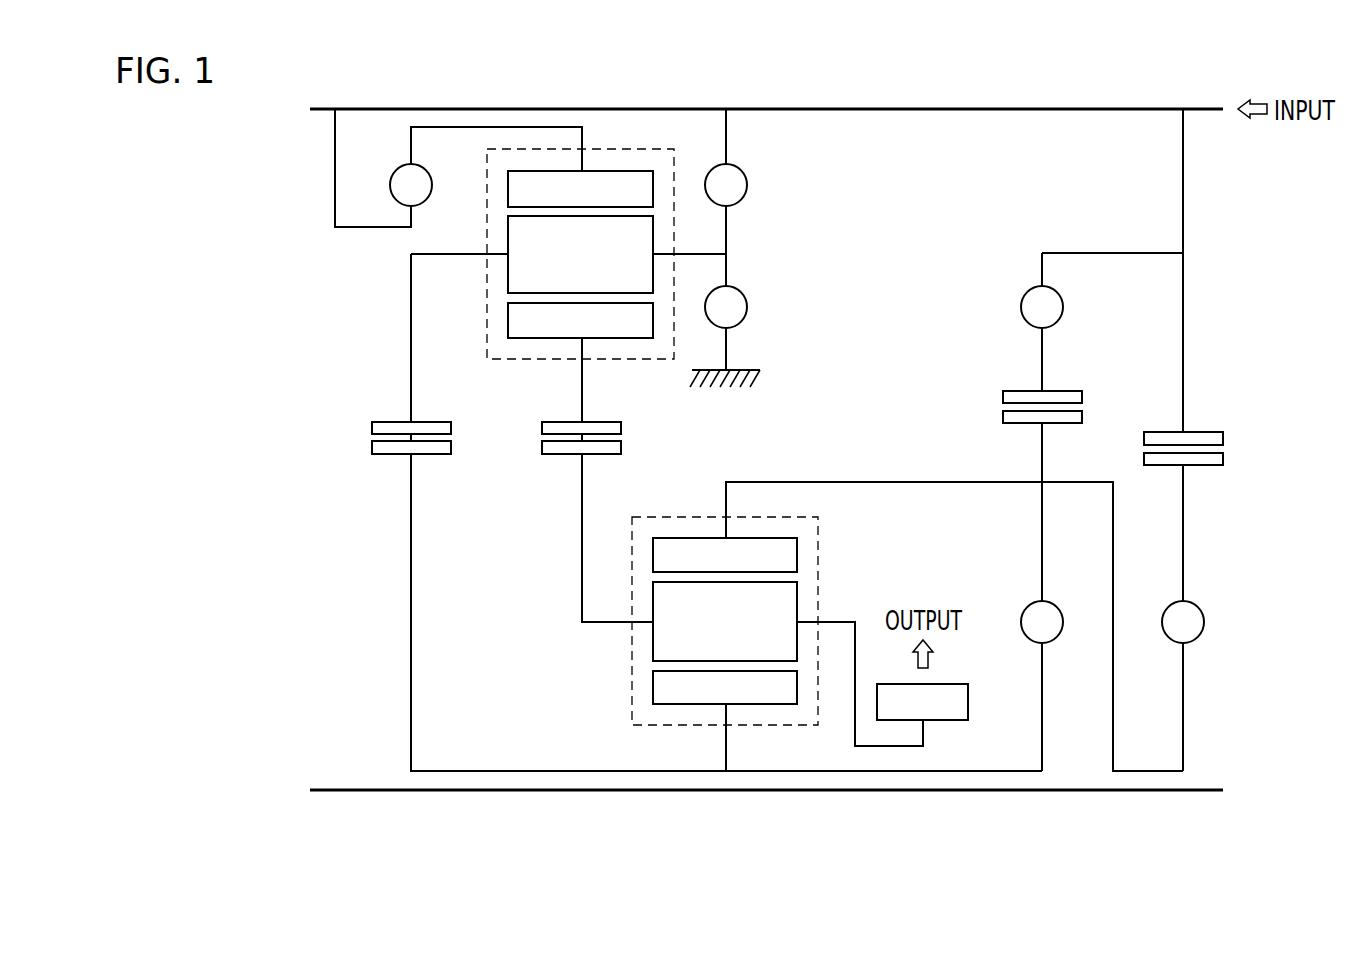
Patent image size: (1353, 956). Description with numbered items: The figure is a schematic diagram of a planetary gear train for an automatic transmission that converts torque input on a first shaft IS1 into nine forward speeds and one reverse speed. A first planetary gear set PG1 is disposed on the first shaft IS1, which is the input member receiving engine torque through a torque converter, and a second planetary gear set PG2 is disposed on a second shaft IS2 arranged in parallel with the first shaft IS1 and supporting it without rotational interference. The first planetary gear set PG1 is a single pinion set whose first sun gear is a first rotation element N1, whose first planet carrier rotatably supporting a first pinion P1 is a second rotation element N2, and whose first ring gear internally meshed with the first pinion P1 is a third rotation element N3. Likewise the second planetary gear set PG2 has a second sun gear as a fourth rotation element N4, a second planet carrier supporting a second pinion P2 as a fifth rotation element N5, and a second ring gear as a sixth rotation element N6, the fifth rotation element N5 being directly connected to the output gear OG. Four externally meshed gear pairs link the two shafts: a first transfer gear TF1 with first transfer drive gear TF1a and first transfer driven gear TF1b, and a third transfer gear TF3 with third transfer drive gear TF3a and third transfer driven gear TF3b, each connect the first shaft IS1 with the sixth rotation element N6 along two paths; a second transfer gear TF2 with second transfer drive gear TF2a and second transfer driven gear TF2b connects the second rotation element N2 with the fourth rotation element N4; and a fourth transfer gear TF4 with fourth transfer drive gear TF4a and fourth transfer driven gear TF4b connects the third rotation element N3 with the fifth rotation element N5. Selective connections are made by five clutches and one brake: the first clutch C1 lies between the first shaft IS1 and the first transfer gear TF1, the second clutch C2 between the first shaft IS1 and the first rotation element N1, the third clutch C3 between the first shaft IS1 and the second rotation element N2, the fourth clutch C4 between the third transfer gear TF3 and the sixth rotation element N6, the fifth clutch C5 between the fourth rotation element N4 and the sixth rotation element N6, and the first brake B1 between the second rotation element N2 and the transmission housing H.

The first shaft IS1 is at (1028, 107).
The second shaft IS2 is at (874, 792).
The first planetary gear set PG1 is at (636, 146).
The second planetary gear set PG2 is at (750, 733).
The first rotation element N1 is at (580, 189).
The second rotation element N2 is at (697, 253).
The third rotation element N3 is at (580, 320).
The fourth rotation element N4 is at (725, 721).
The fifth rotation element N5 is at (602, 624).
The sixth rotation element N6 is at (918, 626).
The first pinion P1 is at (580, 254).
The second pinion P2 is at (725, 621).
The first clutch C1 is at (1102, 322).
The second clutch C2 is at (458, 168).
The third clutch C3 is at (726, 157).
The fourth clutch C4 is at (1183, 618).
The fifth clutch C5 is at (1042, 597).
The first brake B1 is at (726, 288).
The transmission housing H is at (752, 381).
The output gear OG is at (922, 702).
The first transfer gear TF1 is at (981, 407).
The first transfer drive gear TF1a is at (1001, 397).
The first transfer driven gear TF1b is at (1001, 419).
The second transfer gear TF2 is at (350, 437).
The second transfer drive gear TF2a is at (370, 428).
The second transfer driven gear TF2b is at (370, 450).
The third transfer gear TF3 is at (1248, 294).
The third transfer drive gear TF3a is at (1225, 439).
The third transfer driven gear TF3b is at (1225, 460).
The fourth transfer gear TF4 is at (645, 480).
The fourth transfer drive gear TF4a is at (623, 428).
The fourth transfer driven gear TF4b is at (623, 450).